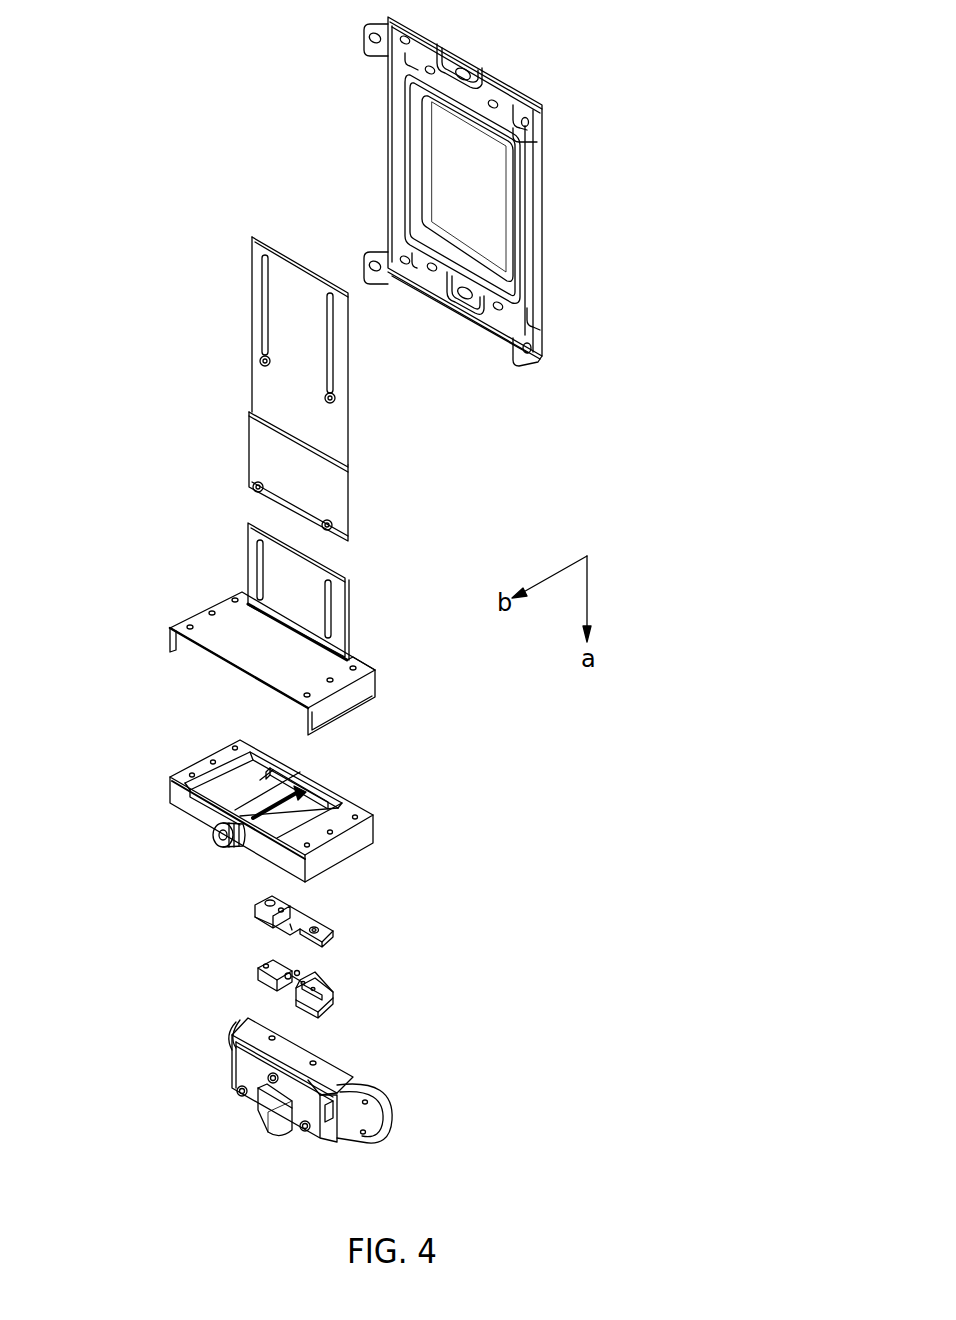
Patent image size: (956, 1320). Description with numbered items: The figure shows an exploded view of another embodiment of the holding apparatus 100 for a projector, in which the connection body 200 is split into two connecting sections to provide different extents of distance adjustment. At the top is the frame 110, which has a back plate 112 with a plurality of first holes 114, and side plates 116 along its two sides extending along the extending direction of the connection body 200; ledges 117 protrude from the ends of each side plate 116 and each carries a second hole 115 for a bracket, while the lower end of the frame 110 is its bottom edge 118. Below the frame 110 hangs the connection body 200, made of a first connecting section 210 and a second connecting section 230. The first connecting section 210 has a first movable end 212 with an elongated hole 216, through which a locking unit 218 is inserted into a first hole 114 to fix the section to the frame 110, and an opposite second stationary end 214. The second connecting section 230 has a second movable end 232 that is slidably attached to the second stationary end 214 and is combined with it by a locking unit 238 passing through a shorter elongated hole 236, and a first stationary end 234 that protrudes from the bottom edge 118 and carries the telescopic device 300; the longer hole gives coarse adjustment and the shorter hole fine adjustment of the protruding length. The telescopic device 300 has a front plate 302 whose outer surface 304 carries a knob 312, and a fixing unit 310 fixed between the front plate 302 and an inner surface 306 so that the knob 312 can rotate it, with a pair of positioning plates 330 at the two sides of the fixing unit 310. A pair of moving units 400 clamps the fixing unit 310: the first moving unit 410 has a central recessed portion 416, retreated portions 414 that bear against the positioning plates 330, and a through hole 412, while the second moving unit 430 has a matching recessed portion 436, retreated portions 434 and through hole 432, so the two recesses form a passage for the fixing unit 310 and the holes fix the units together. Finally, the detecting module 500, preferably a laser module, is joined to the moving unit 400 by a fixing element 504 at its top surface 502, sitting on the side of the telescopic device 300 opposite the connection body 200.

The holding apparatus 100 is at (168, 99).
The frame 110 is at (526, 96).
The back plate 112 is at (478, 90).
The first holes 114 is at (423, 50).
The second hole 115 is at (528, 123).
The side plate 116 is at (540, 167).
The ledges 117 is at (522, 135).
The bottom edge 118 is at (500, 334).
The connection body 200 is at (250, 262).
The first connecting section 210 is at (143, 483).
The first movable end 212 is at (250, 298).
The second stationary end 214 is at (256, 472).
The elongated hole 216 is at (268, 325).
The locking unit 218 is at (262, 363).
The second connecting section 230 is at (86, 530).
The second movable end 232 is at (246, 548).
The first stationary end 234 is at (170, 636).
The elongated hole 236 is at (260, 575).
The locking unit 238 is at (256, 489).
The telescopic device 300 is at (215, 738).
The front plate 302 is at (170, 781).
The outer surface 304 is at (170, 800).
The inner surface 306 is at (300, 790).
The fixing unit 310 is at (262, 782).
The knob 312 is at (218, 836).
The positioning plate 330 is at (290, 772).
The moving unit 400 is at (118, 900).
The first moving unit 410 is at (257, 905).
The through hole 412 is at (315, 925).
The retreated portions 414 is at (258, 908).
The recessed portion 416 is at (291, 931).
The second moving unit 430 is at (257, 983).
The through hole 432 is at (315, 982).
The retreated portions 434 is at (328, 999).
The recessed portion 436 is at (300, 973).
The detecting module 500 is at (232, 1068).
The top surface 502 is at (245, 1025).
The fixing element 504 is at (238, 1040).